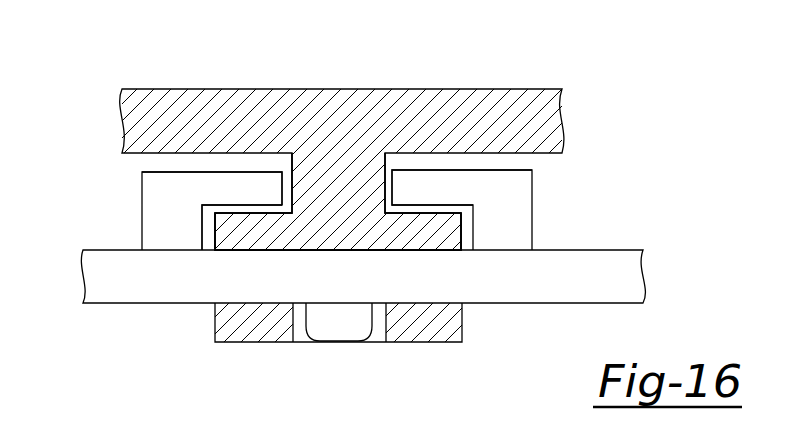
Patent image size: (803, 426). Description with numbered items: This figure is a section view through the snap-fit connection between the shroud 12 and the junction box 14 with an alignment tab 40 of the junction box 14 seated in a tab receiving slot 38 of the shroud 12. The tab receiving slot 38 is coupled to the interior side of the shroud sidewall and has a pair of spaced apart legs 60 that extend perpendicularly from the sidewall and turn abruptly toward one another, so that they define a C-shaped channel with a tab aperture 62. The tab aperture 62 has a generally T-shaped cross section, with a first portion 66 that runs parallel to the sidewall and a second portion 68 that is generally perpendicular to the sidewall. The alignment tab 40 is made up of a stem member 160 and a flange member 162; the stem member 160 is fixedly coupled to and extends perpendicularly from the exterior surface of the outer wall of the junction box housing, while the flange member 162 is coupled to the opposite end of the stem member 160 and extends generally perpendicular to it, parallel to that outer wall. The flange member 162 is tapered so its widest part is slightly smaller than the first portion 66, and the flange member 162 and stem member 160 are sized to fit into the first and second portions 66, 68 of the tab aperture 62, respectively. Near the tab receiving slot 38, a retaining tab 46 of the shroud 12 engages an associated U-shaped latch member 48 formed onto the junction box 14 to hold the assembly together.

The shroud 12 is at (124, 316).
The junction box 14 is at (185, 82).
The tab receiving slot 38 is at (558, 220).
The alignment tab 40 is at (363, 168).
The retaining tab 46 is at (326, 333).
The U-shaped latch member 48 is at (440, 327).
The leg 60 is at (180, 192).
The tab aperture 62 is at (199, 231).
The first portion 66 is at (228, 252).
The second portion 68 is at (387, 192).
The stem member 160 is at (338, 192).
The flange member 162 is at (348, 237).